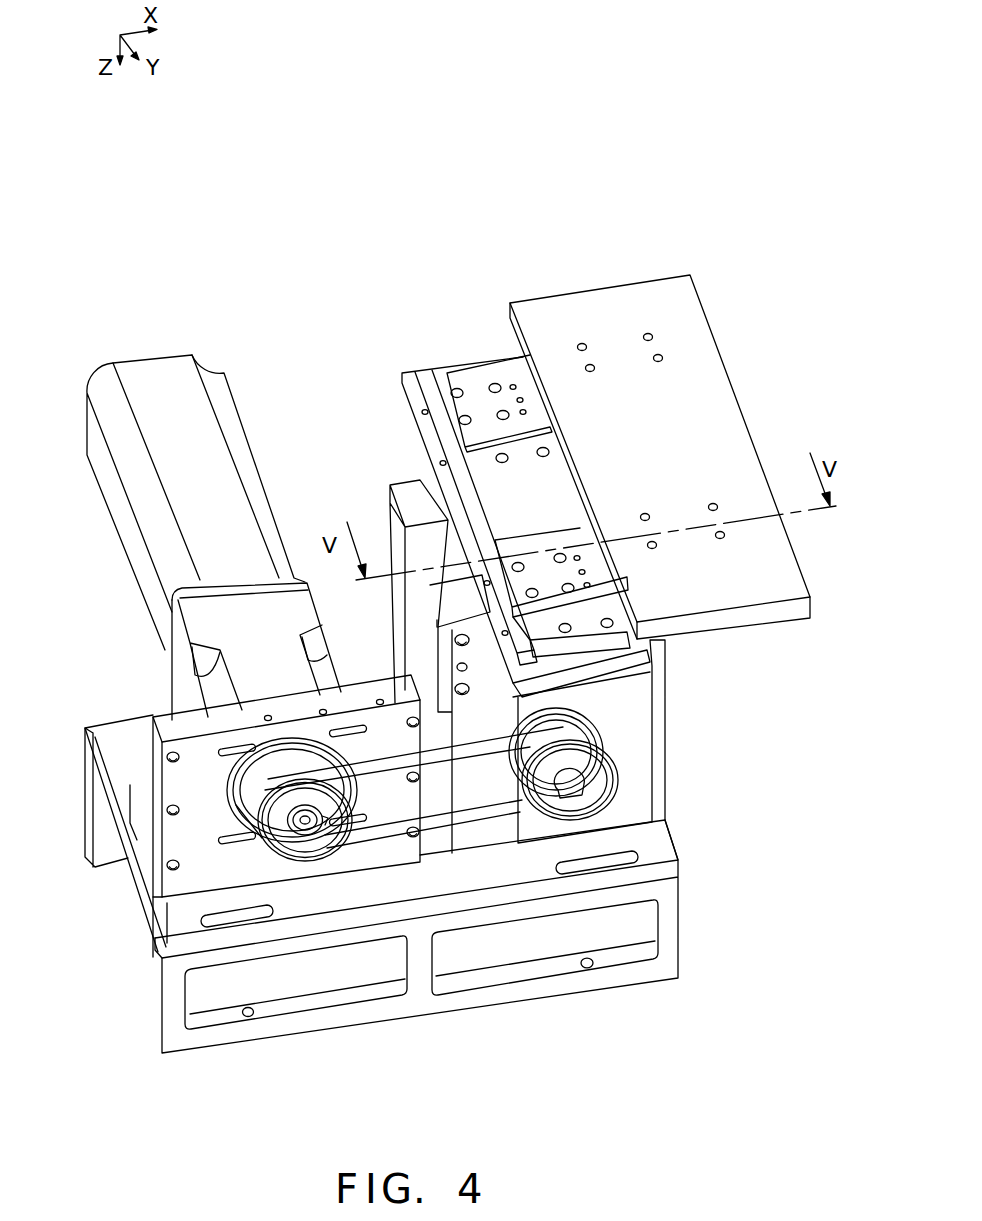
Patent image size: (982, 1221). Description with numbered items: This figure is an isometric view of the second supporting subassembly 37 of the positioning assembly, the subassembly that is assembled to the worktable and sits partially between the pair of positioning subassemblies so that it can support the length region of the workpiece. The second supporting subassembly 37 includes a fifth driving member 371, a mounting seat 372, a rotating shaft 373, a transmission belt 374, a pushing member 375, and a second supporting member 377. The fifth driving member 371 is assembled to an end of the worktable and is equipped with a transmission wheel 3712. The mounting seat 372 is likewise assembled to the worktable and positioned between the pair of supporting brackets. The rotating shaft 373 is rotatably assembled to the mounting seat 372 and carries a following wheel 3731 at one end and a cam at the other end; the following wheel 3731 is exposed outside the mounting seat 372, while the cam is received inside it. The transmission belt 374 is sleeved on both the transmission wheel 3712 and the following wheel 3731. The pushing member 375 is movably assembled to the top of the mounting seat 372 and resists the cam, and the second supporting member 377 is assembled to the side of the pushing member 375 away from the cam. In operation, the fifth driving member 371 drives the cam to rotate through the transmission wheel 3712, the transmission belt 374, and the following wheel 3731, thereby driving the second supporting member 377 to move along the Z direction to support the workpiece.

The second supporting subassembly 37 is at (419, 168).
The fifth driving member 371 is at (162, 550).
The transmission wheel 3712 is at (297, 838).
The mounting seat 372 is at (630, 700).
The rotating shaft 373 is at (570, 780).
The following wheel 3731 is at (575, 803).
The transmission belt 374 is at (475, 818).
The pushing member 375 is at (500, 482).
The second supporting member 377 is at (705, 368).